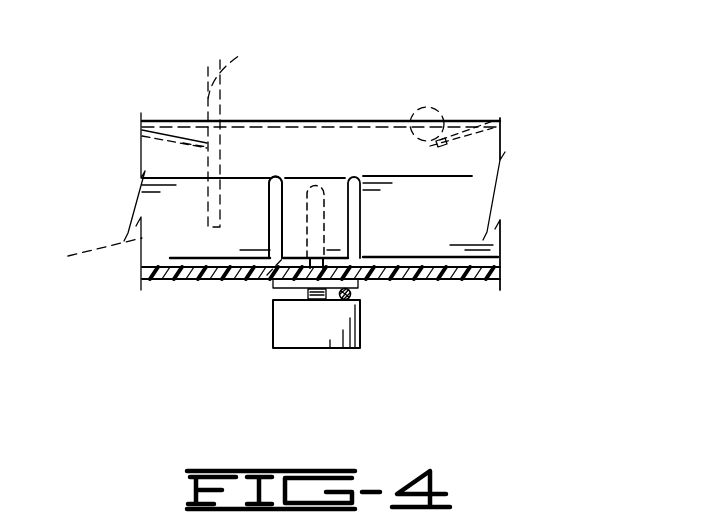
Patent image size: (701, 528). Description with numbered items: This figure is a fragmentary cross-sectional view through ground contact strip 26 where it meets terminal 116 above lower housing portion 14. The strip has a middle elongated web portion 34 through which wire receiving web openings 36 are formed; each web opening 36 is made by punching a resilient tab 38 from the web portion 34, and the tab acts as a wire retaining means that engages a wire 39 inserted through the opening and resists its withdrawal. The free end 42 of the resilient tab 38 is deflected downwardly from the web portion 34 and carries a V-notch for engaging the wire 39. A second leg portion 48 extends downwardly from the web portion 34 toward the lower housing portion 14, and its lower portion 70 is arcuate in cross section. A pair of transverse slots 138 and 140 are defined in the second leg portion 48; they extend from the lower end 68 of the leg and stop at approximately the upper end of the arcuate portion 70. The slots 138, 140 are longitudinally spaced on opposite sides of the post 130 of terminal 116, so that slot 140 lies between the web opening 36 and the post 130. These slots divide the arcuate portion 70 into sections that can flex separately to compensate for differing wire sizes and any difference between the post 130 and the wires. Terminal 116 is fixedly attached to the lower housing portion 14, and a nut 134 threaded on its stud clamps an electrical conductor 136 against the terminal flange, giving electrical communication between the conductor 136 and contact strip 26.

The lower housing portion 14 is at (500, 271).
The ground contact strip 26 is at (455, 112).
The web portion 34 is at (273, 120).
The web opening 36 is at (240, 55).
The resilient tab 38 is at (207, 150).
The wire 39 is at (210, 216).
The free end 42 is at (420, 98).
The second leg portion 48 is at (546, 204).
The arcuate portion 70 is at (477, 213).
The lower end 68 is at (457, 258).
The terminal 116 is at (283, 283).
The post 130 is at (267, 275).
The nut 134 is at (303, 343).
The electrical conductor 136 is at (353, 293).
The transverse slot 138 is at (364, 198).
The transverse slot 140 is at (278, 176).